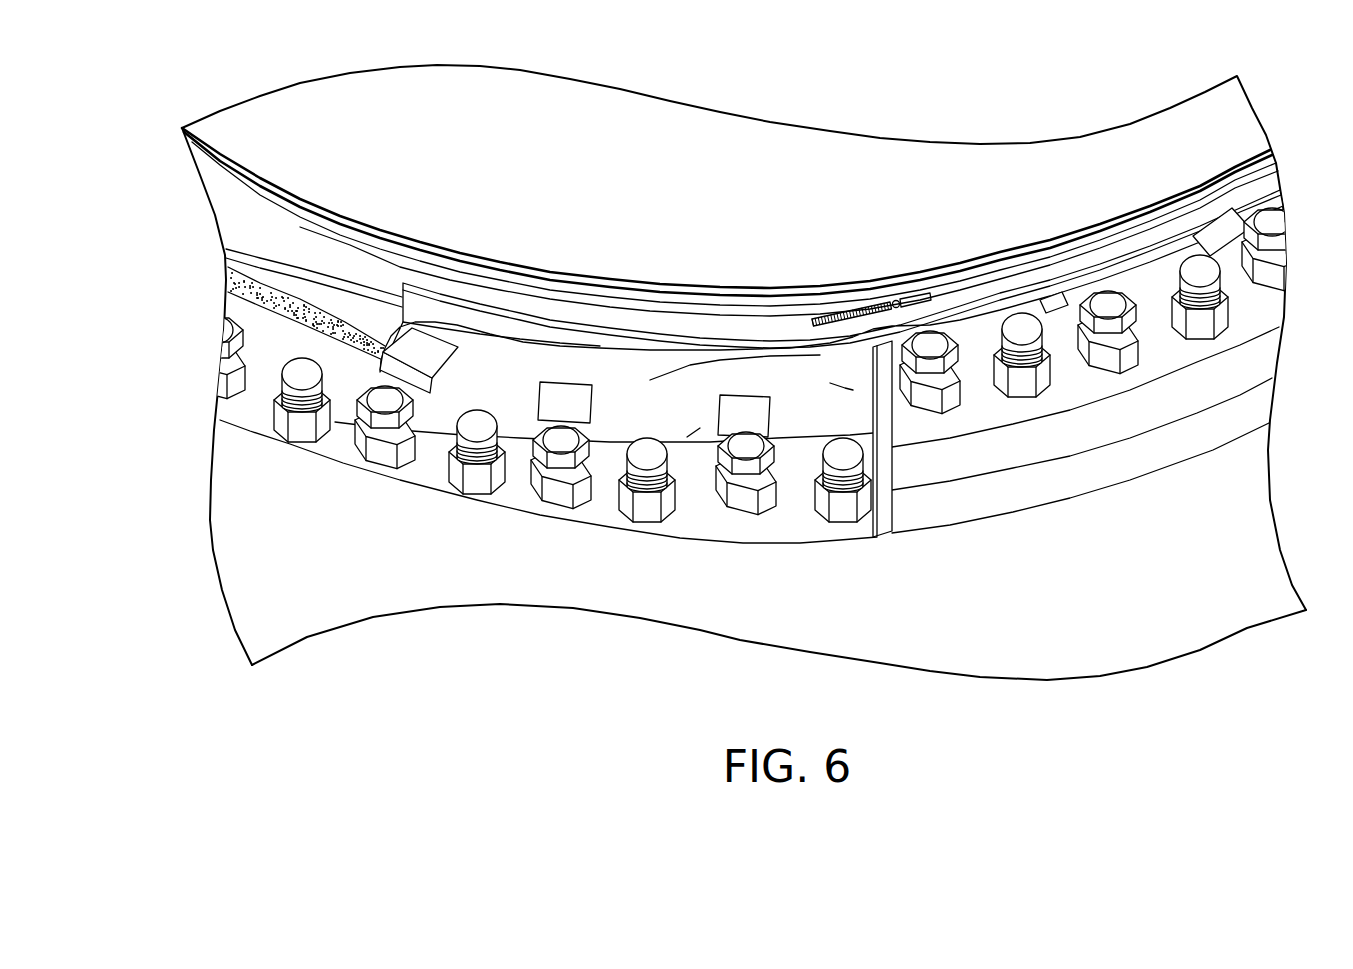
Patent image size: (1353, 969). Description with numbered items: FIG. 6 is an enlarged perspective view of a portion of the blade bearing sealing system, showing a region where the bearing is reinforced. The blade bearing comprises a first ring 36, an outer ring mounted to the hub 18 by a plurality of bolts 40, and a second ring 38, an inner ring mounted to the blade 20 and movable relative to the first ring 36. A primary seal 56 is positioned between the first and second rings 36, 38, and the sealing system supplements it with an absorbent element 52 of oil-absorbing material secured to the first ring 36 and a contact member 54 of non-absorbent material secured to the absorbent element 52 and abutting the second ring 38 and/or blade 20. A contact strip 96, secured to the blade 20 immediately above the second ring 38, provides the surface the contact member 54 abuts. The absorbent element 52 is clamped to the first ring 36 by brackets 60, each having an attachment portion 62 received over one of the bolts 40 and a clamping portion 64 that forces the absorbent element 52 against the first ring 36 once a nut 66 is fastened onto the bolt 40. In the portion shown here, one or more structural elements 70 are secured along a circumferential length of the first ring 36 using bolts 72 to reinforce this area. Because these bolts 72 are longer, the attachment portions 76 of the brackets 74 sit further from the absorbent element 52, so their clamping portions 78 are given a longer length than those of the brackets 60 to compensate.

The hub 18 is at (480, 588).
The blade 20 is at (325, 145).
The first ring 36 is at (277, 437).
The second ring 38 is at (226, 252).
The bolts 40 is at (292, 367).
The absorbent element 52 is at (648, 397).
The contact member 54 is at (402, 285).
The primary seal 56 is at (240, 282).
The bracket 60 is at (435, 346).
The attachment portion 62 is at (413, 405).
The clamping portion 64 is at (407, 355).
The nut 66 is at (366, 419).
The structural element 70 is at (1255, 407).
The bolts 72 is at (1202, 275).
The bracket 74 is at (1077, 297).
The attachment portion 76 is at (1138, 338).
The clamping portion 78 is at (1053, 303).
The contact strip 96 is at (475, 283).